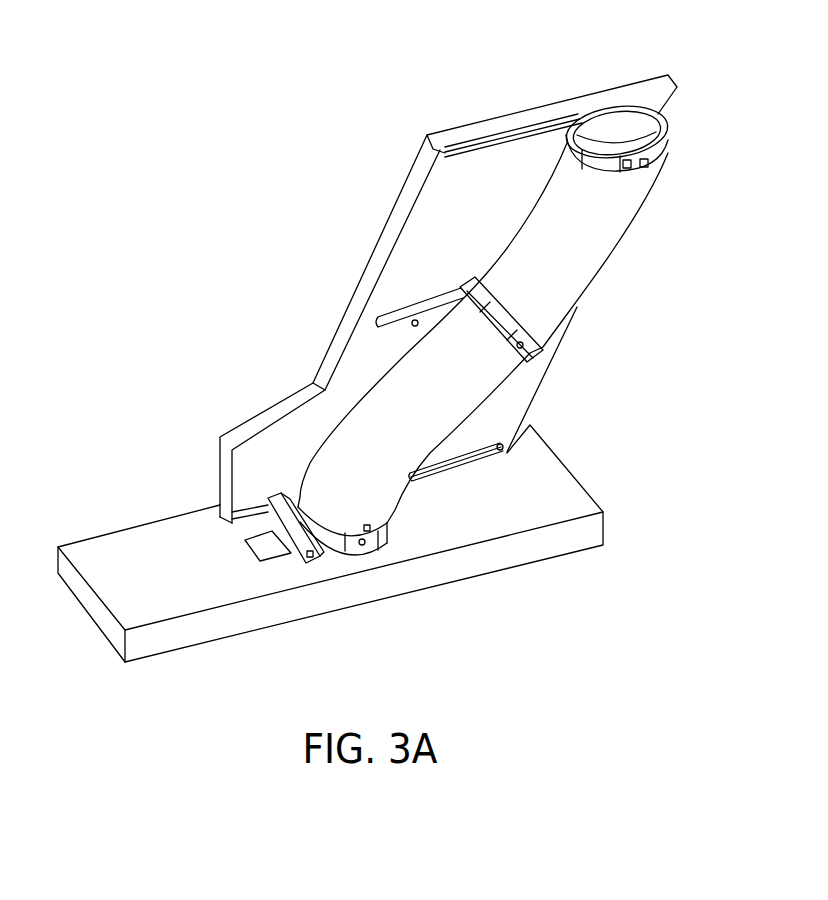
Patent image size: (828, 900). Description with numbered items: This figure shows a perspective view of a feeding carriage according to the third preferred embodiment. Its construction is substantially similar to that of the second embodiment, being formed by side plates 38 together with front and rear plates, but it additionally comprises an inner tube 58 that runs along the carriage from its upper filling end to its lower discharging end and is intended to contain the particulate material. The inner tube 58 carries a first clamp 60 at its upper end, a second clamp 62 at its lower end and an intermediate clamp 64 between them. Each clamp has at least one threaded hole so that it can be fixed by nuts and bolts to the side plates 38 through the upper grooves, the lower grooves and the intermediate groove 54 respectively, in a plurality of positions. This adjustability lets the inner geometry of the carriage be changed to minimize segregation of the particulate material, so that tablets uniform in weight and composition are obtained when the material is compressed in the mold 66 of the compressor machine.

The side plate 38 is at (495, 199).
The intermediate groove 54 is at (430, 303).
The inner tube 58 is at (565, 243).
The first clamp 60 is at (603, 158).
The second clamp 62 is at (403, 540).
The intermediate clamp 64 is at (528, 336).
The mold 66 is at (293, 558).